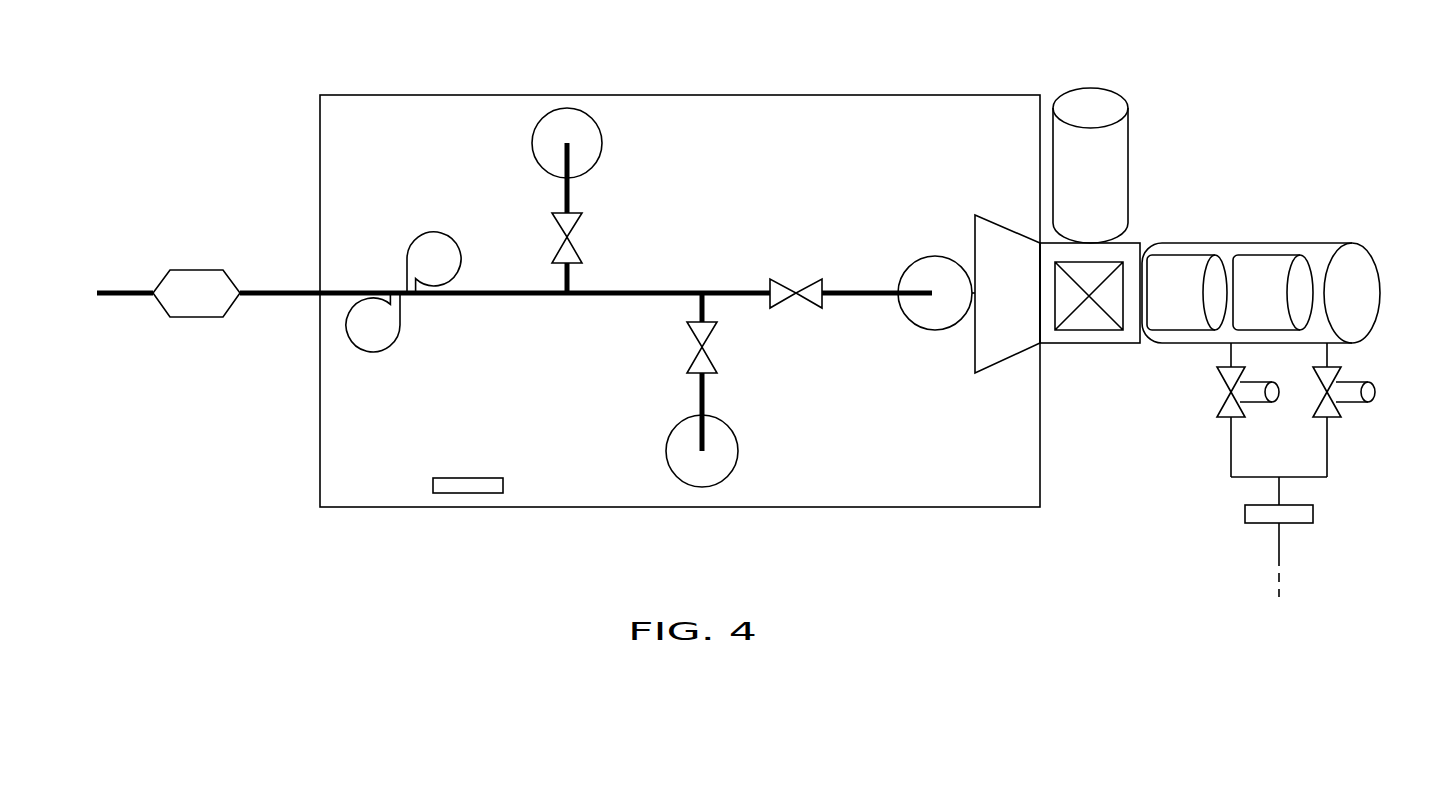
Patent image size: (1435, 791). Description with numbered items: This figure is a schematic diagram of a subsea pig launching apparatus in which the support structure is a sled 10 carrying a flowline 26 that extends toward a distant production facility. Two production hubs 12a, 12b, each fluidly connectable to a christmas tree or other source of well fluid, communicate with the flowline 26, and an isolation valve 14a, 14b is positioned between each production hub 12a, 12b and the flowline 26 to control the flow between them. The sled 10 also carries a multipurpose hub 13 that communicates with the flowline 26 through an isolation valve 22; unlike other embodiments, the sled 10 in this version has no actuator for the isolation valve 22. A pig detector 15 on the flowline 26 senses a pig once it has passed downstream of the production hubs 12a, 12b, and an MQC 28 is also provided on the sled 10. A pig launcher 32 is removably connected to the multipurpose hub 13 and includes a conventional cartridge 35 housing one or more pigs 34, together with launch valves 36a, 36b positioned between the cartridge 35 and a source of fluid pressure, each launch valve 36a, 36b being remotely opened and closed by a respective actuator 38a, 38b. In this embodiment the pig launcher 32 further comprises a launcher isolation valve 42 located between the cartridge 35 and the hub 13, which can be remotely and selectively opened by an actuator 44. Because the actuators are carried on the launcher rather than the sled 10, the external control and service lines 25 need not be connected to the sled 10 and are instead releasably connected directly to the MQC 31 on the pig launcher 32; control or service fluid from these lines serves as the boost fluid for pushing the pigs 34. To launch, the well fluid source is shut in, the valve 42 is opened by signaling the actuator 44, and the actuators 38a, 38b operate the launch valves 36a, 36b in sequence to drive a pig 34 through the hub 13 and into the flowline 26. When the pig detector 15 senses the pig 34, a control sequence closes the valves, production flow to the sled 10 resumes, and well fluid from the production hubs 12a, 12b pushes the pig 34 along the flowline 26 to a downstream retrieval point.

The sled 10 is at (869, 86).
The flowline 26 is at (292, 298).
The pig detector 15 is at (380, 350).
The production hub 12a is at (536, 132).
The production hub 12b is at (666, 447).
The isolation valve 14a is at (582, 218).
The isolation valve 14b is at (688, 366).
The isolation valve 22 is at (822, 283).
The multipurpose hub 13 is at (935, 331).
The launcher isolation valve 42 is at (1089, 327).
The actuator 44 is at (1091, 105).
The pig launcher 32 is at (1299, 232).
The pig 34 is at (1284, 255).
The cartridge 35 is at (1354, 245).
The launch valve 36a is at (1216, 411).
The launch valve 36b is at (1341, 412).
The actuator 38a is at (1250, 403).
The actuator 38b is at (1378, 392).
The MQC 31 is at (1306, 524).
The external control and service lines 25 is at (1265, 554).
The MQC 28 is at (451, 478).